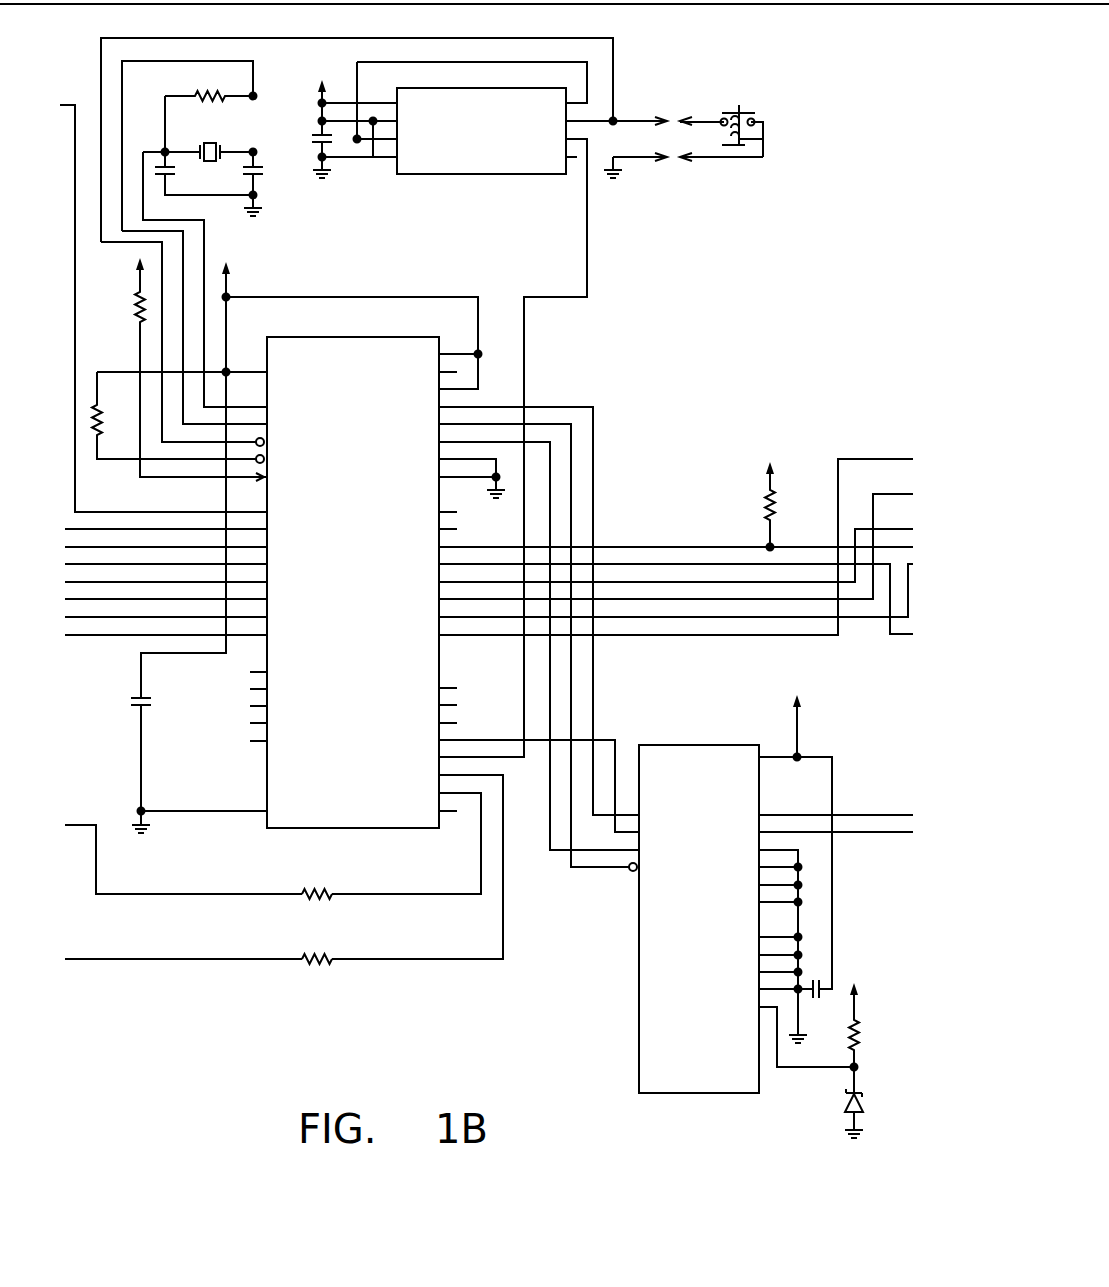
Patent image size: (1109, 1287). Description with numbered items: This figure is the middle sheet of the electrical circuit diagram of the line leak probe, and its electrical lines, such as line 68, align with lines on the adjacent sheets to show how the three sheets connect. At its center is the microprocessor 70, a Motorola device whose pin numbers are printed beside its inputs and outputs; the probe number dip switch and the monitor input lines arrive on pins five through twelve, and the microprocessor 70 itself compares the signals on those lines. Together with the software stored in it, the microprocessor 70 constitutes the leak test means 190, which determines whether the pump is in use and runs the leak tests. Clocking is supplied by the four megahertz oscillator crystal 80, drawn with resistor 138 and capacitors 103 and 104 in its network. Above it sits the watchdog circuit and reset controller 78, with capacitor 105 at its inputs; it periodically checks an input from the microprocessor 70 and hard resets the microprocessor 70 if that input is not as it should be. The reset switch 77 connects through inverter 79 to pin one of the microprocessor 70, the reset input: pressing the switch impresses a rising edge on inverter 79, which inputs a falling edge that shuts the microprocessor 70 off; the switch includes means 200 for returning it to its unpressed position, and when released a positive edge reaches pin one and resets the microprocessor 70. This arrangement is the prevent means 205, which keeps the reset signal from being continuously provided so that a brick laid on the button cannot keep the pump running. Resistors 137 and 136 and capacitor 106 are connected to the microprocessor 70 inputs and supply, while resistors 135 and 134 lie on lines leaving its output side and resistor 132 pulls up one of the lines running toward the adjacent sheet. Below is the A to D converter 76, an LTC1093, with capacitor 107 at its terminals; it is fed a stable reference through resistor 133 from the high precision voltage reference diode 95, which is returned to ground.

The resistor 138 is at (203, 92).
The oscillator crystal 80 is at (207, 142).
The capacitor 105 is at (318, 132).
The capacitor 103 is at (170, 172).
The capacitor 104 is at (255, 175).
The watchdog circuit and reset controller 78 is at (483, 175).
The reset switch 77 is at (769, 96).
The prevent means 205 is at (808, 103).
The means for returning the switch 200 is at (763, 139).
The resistor 137 is at (137, 298).
The resistor 136 is at (93, 420).
The inverter 79 is at (258, 437).
The microprocessor 70 is at (366, 829).
The electrical line 68 is at (96, 665).
The capacitor 106 is at (142, 697).
The leak test means 190 is at (300, 846).
The resistor 135 is at (320, 897).
The resistor 134 is at (320, 963).
The resistor 132 is at (760, 498).
The A to D converter 76 is at (652, 1043).
The capacitor 107 is at (822, 996).
The resistor 133 is at (848, 1040).
The high precision voltage reference diode 95 is at (850, 1100).